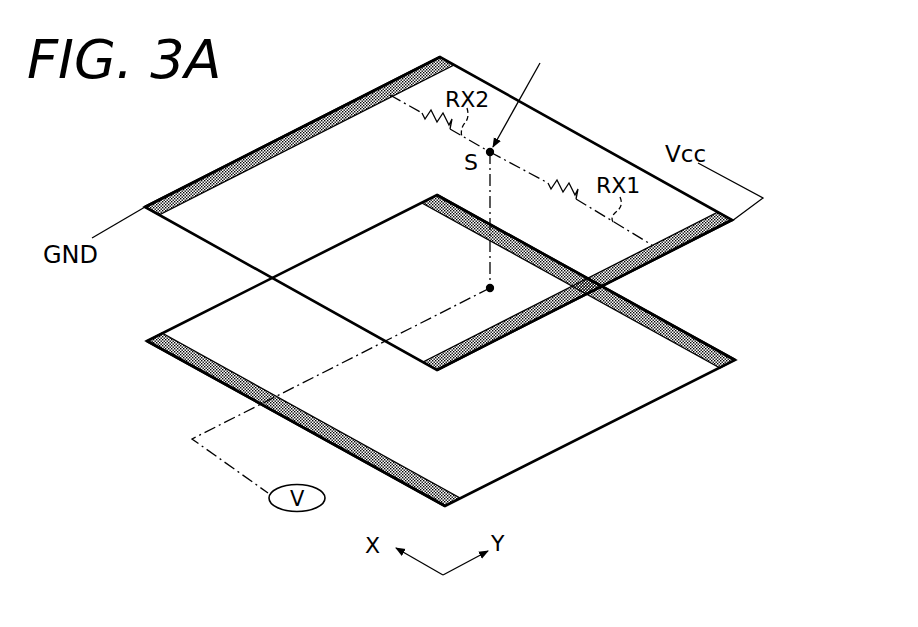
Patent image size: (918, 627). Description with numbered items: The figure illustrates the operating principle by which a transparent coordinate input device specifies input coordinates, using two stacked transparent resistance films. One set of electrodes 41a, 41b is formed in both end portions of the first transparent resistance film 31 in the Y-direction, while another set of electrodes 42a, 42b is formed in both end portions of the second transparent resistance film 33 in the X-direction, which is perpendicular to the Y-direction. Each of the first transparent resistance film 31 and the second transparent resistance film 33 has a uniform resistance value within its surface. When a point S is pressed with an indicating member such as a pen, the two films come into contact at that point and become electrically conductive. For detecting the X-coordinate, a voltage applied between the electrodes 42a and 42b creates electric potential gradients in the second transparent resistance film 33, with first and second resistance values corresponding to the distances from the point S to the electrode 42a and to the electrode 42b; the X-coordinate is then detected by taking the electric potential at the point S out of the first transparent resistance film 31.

The first transparent resistance film 31 is at (658, 393).
The second transparent resistance film 33 is at (582, 138).
The electrode 41a is at (721, 338).
The electrode 41b is at (167, 360).
The electrode 42a is at (715, 230).
The electrode 42b is at (318, 115).